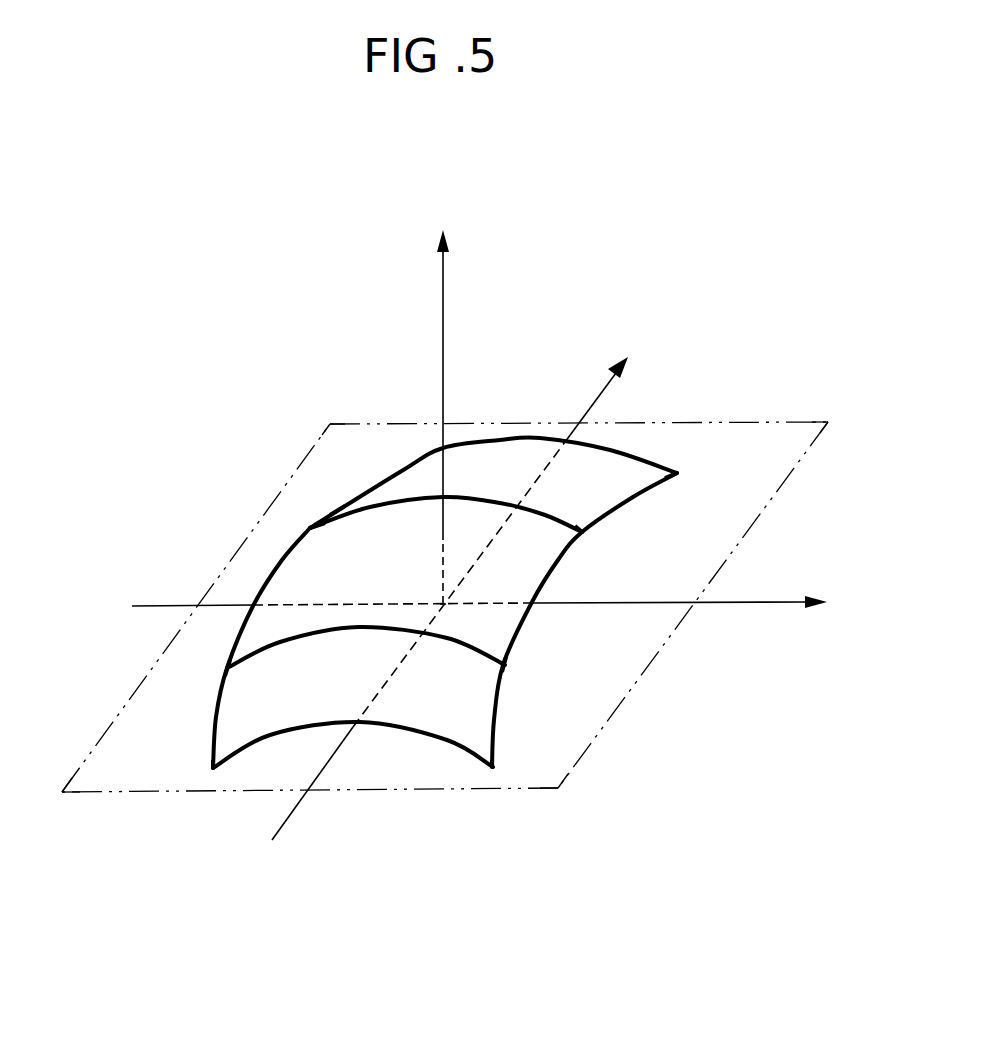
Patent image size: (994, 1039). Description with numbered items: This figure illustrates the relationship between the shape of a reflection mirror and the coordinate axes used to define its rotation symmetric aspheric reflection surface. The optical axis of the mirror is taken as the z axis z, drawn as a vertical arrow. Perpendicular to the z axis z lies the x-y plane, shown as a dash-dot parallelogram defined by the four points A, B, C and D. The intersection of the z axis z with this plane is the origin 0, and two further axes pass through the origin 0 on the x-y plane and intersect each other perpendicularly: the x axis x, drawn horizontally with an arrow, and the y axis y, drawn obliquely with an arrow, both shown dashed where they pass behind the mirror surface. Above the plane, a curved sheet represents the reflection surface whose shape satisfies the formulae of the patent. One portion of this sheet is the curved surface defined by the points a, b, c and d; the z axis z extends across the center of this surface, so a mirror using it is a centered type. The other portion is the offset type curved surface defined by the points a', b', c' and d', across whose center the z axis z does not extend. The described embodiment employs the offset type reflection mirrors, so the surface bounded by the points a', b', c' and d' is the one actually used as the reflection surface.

The point A is at (321, 420).
The point B is at (56, 798).
The point C is at (563, 794).
The point D is at (834, 418).
The x axis x is at (488, 601).
The y axis y is at (459, 592).
The z axis z is at (441, 402).
The origin 0 is at (452, 620).
The point a is at (346, 481).
The point a' is at (298, 526).
The point b is at (216, 668).
The point b' is at (198, 771).
The point c is at (516, 669).
The point c' is at (508, 771).
The point d is at (685, 469).
The point d' is at (595, 541).